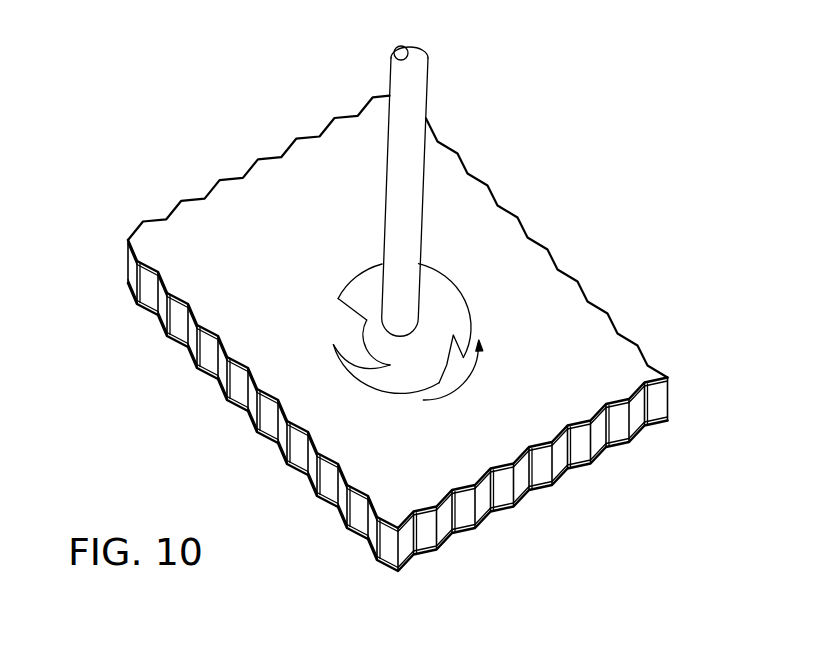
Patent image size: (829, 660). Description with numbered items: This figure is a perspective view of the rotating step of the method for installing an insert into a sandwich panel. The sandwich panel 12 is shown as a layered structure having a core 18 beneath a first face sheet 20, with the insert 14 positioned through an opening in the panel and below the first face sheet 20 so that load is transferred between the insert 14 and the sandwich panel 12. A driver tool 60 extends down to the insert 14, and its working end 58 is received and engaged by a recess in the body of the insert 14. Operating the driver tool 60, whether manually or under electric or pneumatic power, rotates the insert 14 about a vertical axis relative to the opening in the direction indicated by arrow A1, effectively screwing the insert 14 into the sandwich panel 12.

The sandwich panel 12 is at (409, 333).
The insert 14 is at (452, 300).
The core 18 is at (645, 432).
The first face sheet 20 is at (583, 342).
The working end 58 is at (423, 292).
The driver tool 60 is at (427, 100).
The arrow A1 is at (470, 375).